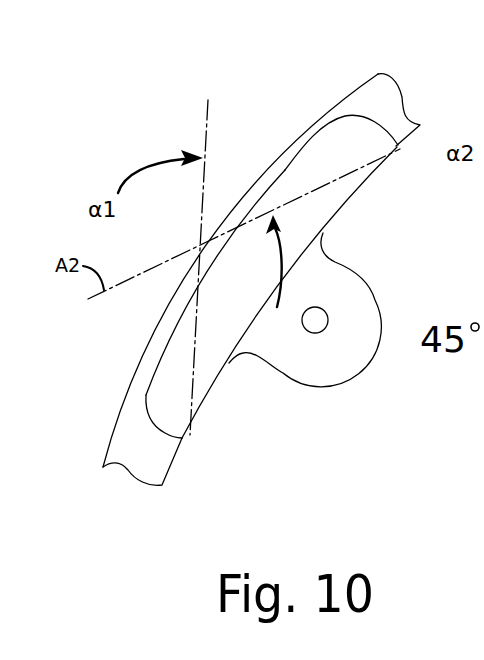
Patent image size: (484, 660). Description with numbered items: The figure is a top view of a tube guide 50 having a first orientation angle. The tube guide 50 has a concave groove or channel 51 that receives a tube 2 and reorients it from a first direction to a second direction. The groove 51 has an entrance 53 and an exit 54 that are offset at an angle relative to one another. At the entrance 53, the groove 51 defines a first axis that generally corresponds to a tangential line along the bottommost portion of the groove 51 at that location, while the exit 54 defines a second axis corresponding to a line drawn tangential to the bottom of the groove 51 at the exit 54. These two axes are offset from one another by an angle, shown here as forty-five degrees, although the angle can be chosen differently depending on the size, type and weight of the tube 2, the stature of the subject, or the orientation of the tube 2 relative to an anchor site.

The tube 2 is at (135, 482).
The tube guide 50 is at (302, 369).
The concave groove 51 is at (350, 140).
The entrance 53 is at (183, 440).
The exit 54 is at (403, 148).